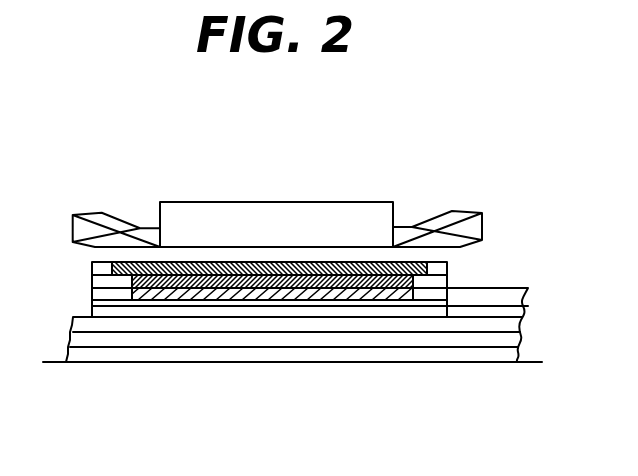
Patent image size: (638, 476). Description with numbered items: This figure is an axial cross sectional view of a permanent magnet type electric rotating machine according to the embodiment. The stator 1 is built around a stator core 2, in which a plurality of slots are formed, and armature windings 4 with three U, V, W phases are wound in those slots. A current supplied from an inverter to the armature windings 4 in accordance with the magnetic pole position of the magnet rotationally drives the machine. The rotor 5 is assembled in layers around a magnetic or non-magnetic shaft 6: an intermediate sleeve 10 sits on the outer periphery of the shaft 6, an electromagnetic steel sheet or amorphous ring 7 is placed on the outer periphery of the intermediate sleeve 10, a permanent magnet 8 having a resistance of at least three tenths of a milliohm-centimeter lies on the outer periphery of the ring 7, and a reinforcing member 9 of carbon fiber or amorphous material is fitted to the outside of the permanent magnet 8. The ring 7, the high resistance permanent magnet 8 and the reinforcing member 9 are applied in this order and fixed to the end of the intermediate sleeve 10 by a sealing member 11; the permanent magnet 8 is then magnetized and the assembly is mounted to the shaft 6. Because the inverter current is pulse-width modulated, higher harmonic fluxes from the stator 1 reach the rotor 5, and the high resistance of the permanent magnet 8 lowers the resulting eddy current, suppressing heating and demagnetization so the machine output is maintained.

The package body 1 is at (333, 203).
The stator core 2 is at (255, 217).
The armature windings 4 is at (453, 213).
The rotor 5 is at (80, 289).
The shaft 6 is at (460, 348).
The electromagnetic steel sheet or amorphous ring 7 is at (331, 292).
The permanent magnet 8 is at (265, 287).
The reinforcing member 9 is at (204, 265).
The intermediate sleeve 10 is at (440, 287).
The sealing member 11 is at (112, 303).